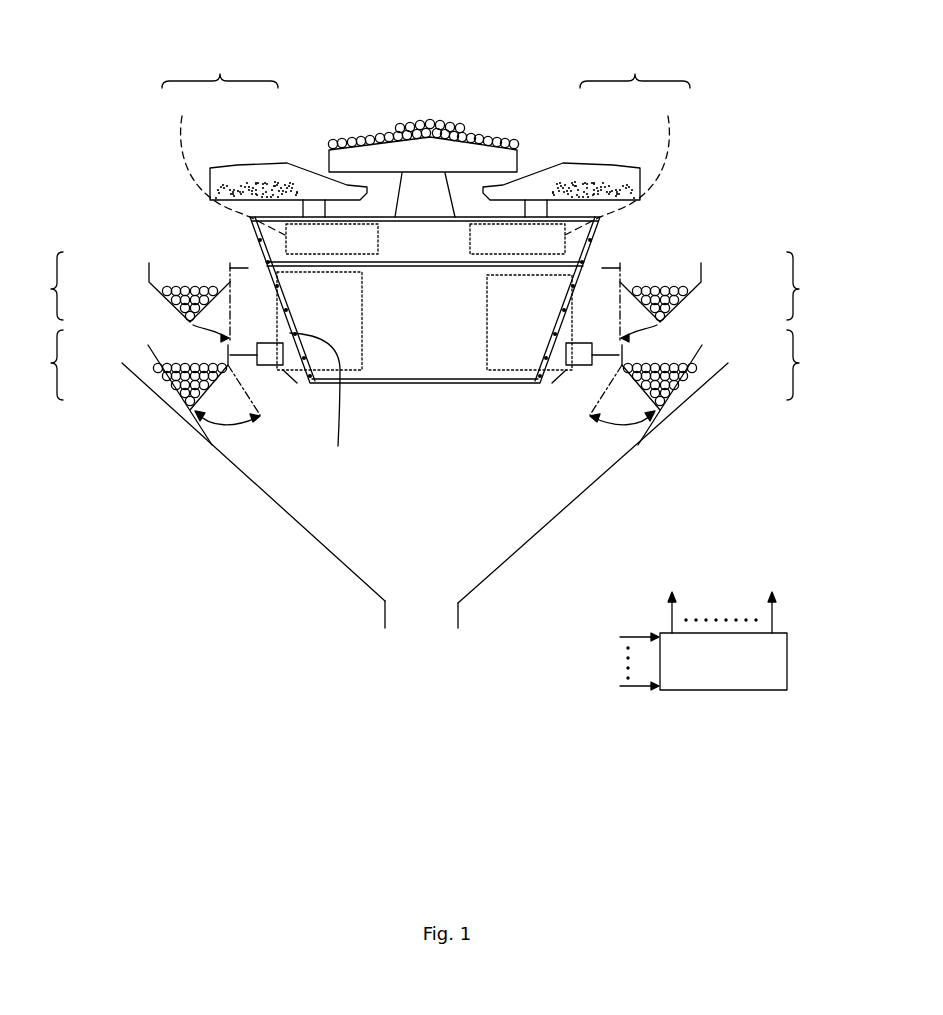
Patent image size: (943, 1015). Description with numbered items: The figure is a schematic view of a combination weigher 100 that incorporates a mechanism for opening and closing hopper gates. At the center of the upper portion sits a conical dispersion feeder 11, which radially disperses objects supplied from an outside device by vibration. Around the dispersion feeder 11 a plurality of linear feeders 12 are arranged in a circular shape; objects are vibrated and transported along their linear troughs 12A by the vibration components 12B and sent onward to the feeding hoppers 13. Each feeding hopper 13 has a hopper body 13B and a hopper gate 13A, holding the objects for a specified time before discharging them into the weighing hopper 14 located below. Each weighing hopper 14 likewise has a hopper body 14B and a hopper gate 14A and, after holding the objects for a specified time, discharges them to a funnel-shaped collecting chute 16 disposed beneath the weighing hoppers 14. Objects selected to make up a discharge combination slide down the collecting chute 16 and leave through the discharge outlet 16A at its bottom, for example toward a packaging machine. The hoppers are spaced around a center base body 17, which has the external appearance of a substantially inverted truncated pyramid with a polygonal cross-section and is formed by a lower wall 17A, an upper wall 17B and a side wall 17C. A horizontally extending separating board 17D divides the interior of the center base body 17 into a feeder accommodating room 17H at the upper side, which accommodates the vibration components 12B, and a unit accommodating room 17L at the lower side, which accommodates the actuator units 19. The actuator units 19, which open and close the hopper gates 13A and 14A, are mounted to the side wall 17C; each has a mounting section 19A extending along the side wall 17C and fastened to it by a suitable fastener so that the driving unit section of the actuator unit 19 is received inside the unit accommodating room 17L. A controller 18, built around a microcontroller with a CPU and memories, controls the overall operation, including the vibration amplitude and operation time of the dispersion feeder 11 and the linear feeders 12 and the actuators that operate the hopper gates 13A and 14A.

The combination weigher 100 is at (409, 50).
The dispersion feeder 11 is at (478, 143).
The linear feeder 12 is at (426, 66).
The linear trough 12A is at (247, 165).
The vibration component 12B is at (425, 164).
The feeding hopper 13 is at (425, 286).
The hopper gate 13A is at (224, 338).
The hopper body 13B is at (148, 270).
The weighing hopper 14 is at (425, 365).
The hopper gate 14A is at (210, 390).
The hopper body 14B is at (157, 357).
The collecting chute 16 is at (622, 445).
The discharge outlet 16A is at (411, 633).
The center base body 17 is at (392, 386).
The lower wall 17A is at (415, 385).
The upper wall 17B is at (512, 217).
The side wall 17C is at (321, 401).
The separating board 17D is at (568, 262).
The feeder accommodating room 17H is at (405, 252).
The unit accommodating room 17L is at (408, 332).
The controller 18 is at (789, 661).
The actuator unit 19 is at (301, 388).
The mounting section 19A is at (290, 382).